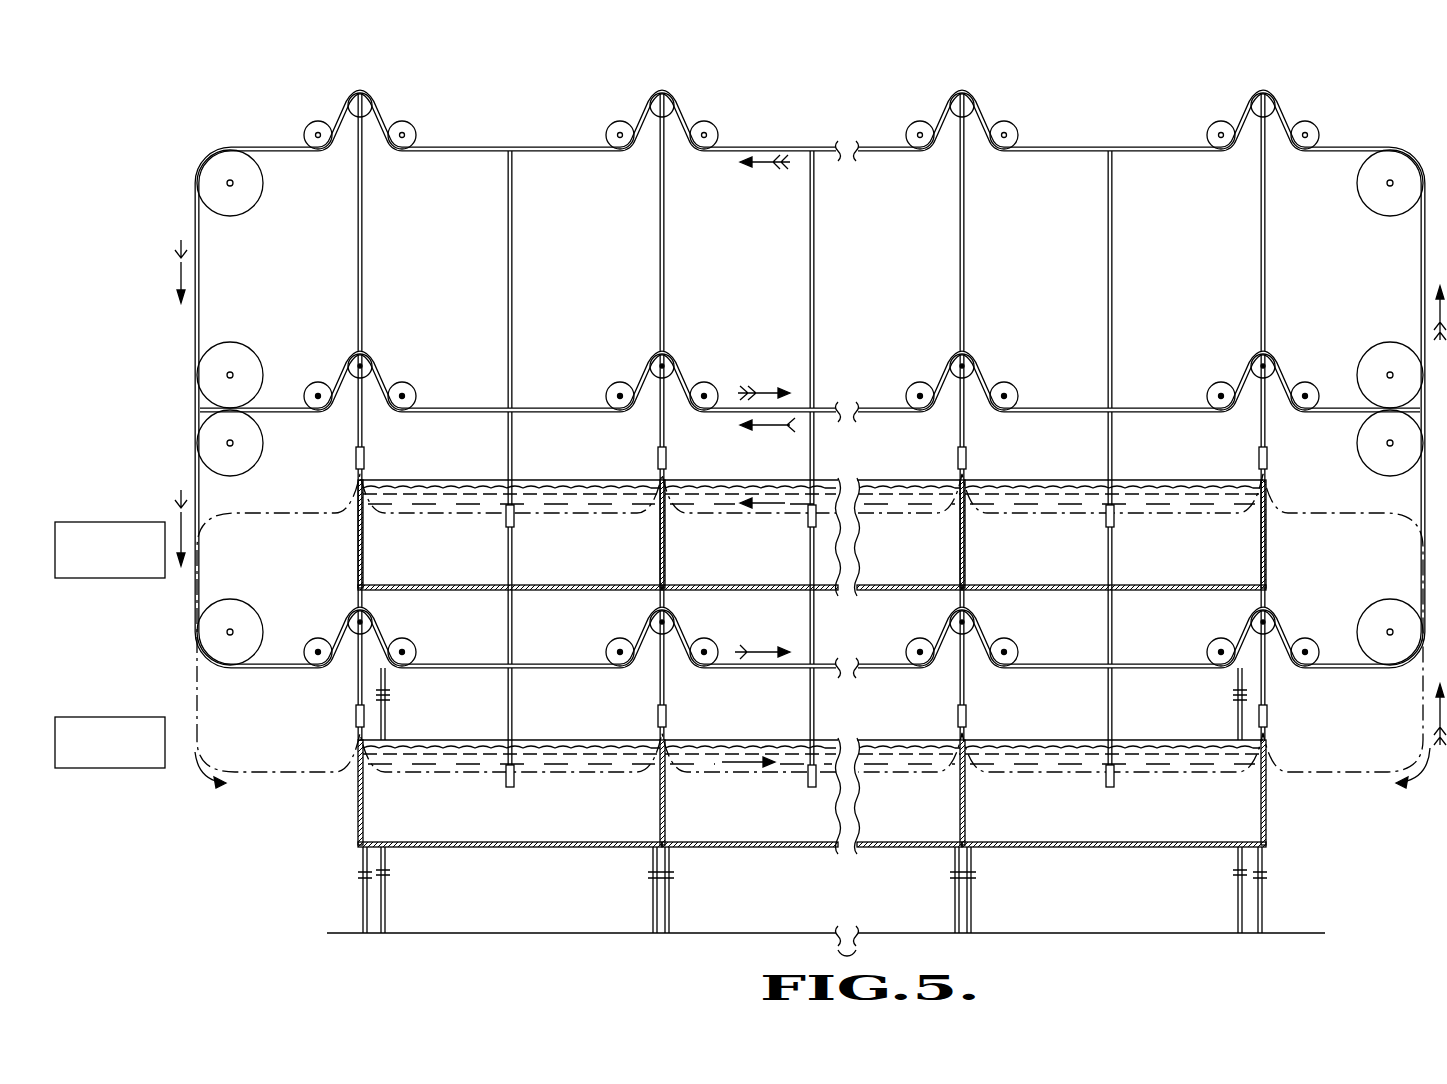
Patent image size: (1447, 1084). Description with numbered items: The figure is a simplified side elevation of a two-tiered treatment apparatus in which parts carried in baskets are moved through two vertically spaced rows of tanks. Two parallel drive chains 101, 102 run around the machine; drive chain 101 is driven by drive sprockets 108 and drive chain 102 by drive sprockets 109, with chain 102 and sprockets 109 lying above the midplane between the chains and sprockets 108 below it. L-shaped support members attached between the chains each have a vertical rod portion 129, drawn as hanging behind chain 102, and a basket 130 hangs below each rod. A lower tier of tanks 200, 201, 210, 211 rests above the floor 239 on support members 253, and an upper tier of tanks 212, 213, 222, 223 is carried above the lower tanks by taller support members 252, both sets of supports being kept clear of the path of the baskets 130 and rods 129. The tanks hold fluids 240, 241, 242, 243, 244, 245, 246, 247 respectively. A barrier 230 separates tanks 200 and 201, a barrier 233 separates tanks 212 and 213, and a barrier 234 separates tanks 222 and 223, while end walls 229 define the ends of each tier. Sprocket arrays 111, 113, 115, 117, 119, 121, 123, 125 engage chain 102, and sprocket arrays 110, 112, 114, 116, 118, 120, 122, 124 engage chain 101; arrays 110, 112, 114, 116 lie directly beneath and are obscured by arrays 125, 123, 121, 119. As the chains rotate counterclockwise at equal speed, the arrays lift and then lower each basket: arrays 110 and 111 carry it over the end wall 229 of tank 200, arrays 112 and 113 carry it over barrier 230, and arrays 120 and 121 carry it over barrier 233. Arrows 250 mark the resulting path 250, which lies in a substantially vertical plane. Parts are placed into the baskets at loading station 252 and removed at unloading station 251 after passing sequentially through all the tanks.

The drive chain 101 is at (459, 148).
The drive chain 102 is at (846, 420).
The drive sprocket 108 is at (220, 166).
The drive sprocket 109 is at (205, 443).
The sprocket array 110 is at (366, 372).
The sprocket array 111 is at (345, 640).
The sprocket array 112 is at (666, 374).
The sprocket array 113 is at (660, 632).
The sprocket array 114 is at (966, 374).
The sprocket array 115 is at (960, 632).
The sprocket array 116 is at (1266, 374).
The sprocket array 117 is at (1226, 642).
The sprocket array 118 is at (1228, 130).
The sprocket array 119 is at (1228, 378).
The sprocket array 120 is at (927, 130).
The sprocket array 121 is at (927, 378).
The sprocket array 122 is at (627, 130).
The sprocket array 123 is at (627, 378).
The sprocket array 124 is at (325, 130).
The sprocket array 125 is at (325, 378).
The vertical rod portion 129 is at (506, 222).
The basket 130 is at (356, 457).
The tank 200 is at (508, 848).
The tank 201 is at (752, 848).
The tank 210 is at (902, 848).
The tank 211 is at (1095, 848).
The tank 212 is at (1055, 590).
The tank 213 is at (890, 590).
The tank 222 is at (828, 590).
The tank 223 is at (533, 590).
The end wall 229 is at (357, 544).
The barrier 230 is at (658, 840).
The barrier 233 is at (954, 512).
The barrier 234 is at (678, 516).
The floor 239 is at (329, 932).
The fluid 240 is at (590, 819).
The fluid 241 is at (755, 819).
The fluid 242 is at (945, 819).
The fluid 243 is at (1075, 819).
The fluid 244 is at (1070, 574).
The fluid 245 is at (945, 574).
The fluid 246 is at (775, 584).
The fluid 247 is at (588, 562).
The path 250 is at (540, 510).
The unloading station 251 is at (128, 524).
The loading station / support member 252 is at (128, 720).
The support member 253 is at (362, 906).